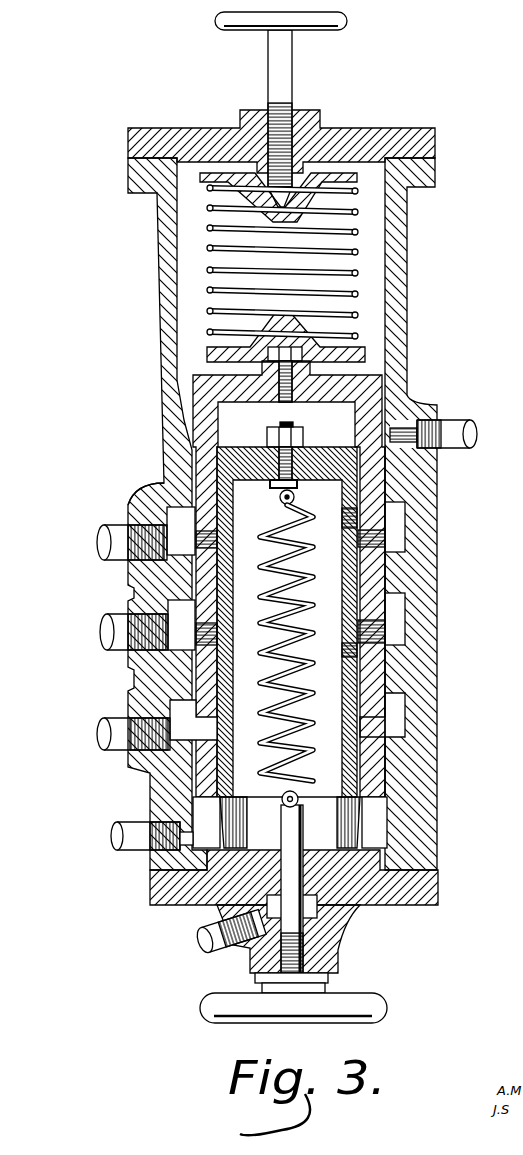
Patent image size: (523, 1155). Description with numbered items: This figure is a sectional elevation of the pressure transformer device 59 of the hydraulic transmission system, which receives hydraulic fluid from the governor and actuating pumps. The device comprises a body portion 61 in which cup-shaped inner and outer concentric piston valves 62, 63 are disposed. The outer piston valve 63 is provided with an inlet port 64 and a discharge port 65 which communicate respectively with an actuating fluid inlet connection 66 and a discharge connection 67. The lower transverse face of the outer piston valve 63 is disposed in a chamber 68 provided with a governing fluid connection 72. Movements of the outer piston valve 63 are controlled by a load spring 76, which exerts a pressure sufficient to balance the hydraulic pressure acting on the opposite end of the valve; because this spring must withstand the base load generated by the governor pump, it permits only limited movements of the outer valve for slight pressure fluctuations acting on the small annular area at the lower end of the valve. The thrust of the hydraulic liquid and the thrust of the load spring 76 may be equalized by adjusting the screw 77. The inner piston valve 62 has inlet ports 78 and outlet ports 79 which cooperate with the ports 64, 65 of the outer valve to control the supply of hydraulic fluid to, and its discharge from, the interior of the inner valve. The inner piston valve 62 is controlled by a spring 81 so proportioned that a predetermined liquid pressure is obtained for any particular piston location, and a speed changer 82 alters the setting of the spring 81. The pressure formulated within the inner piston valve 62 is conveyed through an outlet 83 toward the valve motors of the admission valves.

The pressure transformer device 59 is at (471, 374).
The body portion 61 is at (437, 523).
The inner piston valve 62 is at (360, 690).
The outer piston valve 63 is at (368, 580).
The inlet port 64 is at (133, 494).
The discharge port 65 is at (203, 642).
The actuating fluid inlet connection 66 is at (103, 543).
The discharge connection 67 is at (107, 633).
The chamber 68 is at (203, 725).
The governing fluid connection 72 is at (100, 732).
The load spring 76 is at (358, 293).
The screw 77 is at (322, 32).
The inlet ports 78 is at (197, 540).
The outlet ports 79 is at (228, 650).
The spring 81 is at (313, 753).
The speed changer 82 is at (357, 993).
The outlet 83 is at (113, 840).